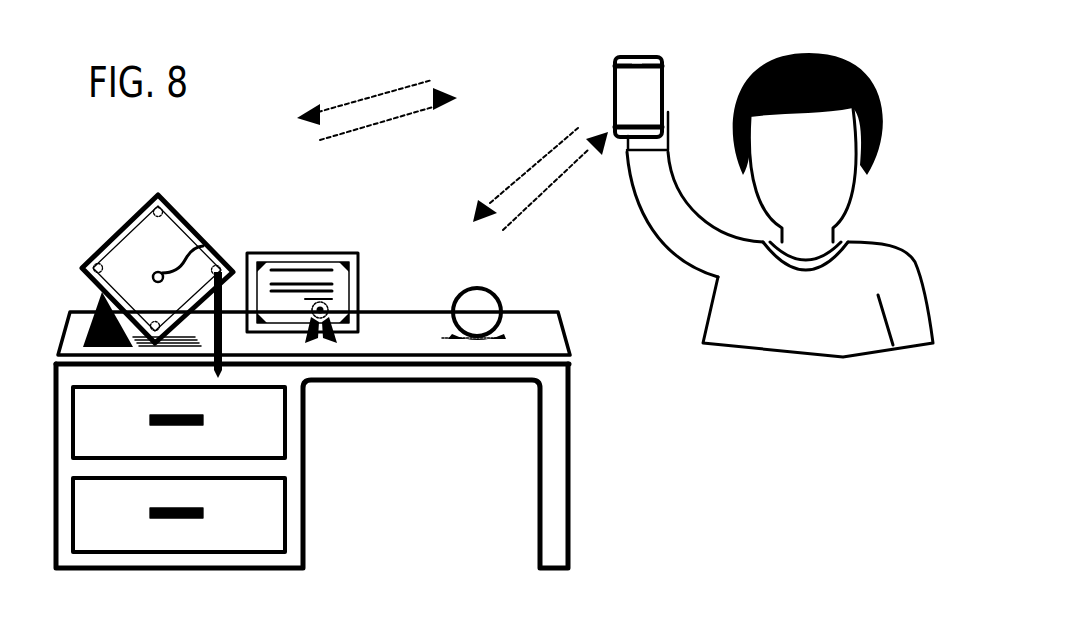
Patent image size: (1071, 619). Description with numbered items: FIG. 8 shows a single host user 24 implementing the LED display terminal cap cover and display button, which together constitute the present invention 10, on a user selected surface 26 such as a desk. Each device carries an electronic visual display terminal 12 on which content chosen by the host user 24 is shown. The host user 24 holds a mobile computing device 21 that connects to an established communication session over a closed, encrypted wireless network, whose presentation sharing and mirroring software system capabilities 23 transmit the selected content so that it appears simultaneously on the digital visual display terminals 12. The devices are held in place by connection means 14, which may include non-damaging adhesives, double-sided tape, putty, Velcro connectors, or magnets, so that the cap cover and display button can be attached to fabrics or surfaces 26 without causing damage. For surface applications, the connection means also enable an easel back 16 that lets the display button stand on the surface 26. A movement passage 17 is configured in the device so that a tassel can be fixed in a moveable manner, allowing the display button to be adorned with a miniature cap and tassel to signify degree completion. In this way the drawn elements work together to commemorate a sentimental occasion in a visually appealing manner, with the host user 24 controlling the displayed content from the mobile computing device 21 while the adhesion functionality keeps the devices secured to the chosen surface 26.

The LED display terminal cap cover and display button 10 is at (315, 263).
The electronic visual display terminal 12 is at (211, 256).
The connection means 14 is at (172, 206).
The easel back 16 is at (515, 331).
The movement passage 17 is at (150, 270).
The mobile computing device 21 is at (625, 72).
The presentation sharing and mirroring software system capabilities 23 is at (378, 80).
The host user 24 is at (858, 358).
The surface 26 is at (575, 519).